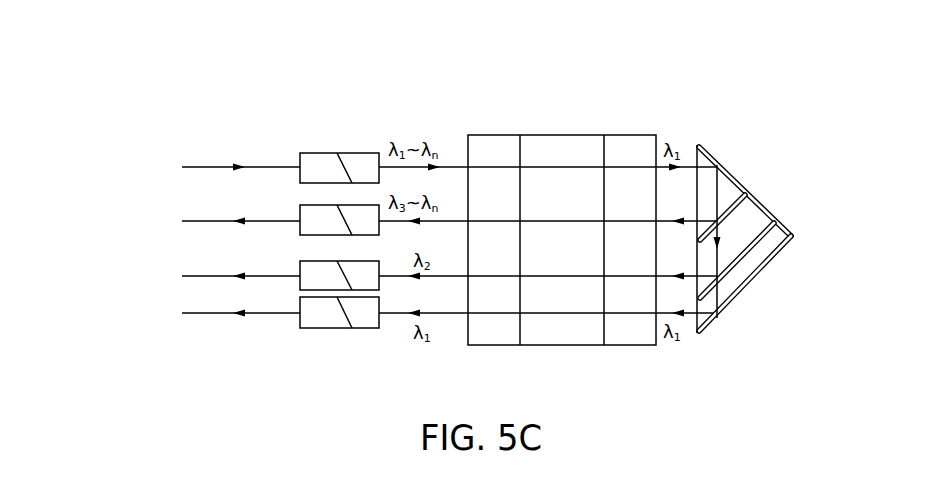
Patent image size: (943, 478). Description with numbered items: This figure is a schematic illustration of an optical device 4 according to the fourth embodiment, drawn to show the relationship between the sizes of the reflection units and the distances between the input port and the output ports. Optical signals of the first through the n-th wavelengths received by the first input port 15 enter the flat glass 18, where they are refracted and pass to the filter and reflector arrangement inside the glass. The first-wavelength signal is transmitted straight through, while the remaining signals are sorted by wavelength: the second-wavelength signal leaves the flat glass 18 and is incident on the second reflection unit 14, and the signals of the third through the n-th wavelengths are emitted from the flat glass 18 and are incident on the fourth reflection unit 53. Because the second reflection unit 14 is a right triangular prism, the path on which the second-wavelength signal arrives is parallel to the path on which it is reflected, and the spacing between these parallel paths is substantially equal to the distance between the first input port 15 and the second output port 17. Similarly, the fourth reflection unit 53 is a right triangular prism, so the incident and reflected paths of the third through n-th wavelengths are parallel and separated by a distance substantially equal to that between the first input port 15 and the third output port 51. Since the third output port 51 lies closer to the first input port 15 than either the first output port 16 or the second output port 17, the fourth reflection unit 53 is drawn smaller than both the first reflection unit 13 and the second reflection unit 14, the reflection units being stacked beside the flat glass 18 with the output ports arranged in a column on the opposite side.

The optical device 4 is at (244, 66).
The first input port 15 is at (320, 158).
The third output port 51 is at (308, 212).
The second output port 17 is at (308, 268).
The first output port 16 is at (318, 320).
The flat glass 18 is at (499, 142).
The fourth reflection unit 53 is at (725, 187).
The second reflection unit 14 is at (748, 217).
The first reflection unit 13 is at (758, 255).